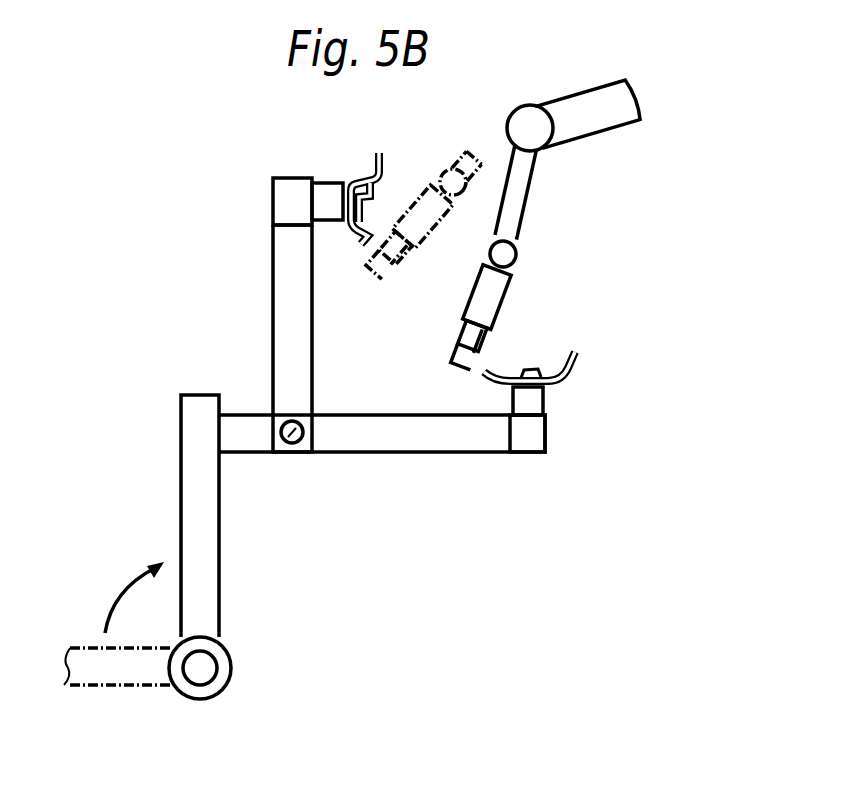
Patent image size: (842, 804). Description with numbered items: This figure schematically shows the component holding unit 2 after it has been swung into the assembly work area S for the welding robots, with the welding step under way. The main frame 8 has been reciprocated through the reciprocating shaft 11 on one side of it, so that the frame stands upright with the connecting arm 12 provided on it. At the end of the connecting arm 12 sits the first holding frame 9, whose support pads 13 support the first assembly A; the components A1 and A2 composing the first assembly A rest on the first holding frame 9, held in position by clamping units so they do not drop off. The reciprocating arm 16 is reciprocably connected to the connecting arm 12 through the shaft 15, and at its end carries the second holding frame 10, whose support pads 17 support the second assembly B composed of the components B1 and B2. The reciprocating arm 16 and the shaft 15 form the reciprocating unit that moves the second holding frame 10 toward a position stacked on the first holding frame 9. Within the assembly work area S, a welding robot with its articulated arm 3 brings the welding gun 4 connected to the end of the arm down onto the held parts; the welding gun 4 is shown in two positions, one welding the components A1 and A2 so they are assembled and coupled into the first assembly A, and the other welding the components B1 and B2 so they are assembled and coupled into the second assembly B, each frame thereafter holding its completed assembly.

The component holding unit 2 is at (158, 343).
The articulated arm 3 is at (578, 103).
The welding gun 4 is at (457, 303).
The assembly work area S is at (652, 199).
The main frame 8 is at (220, 560).
The first holding frame 9 is at (547, 440).
The second holding frame 10 is at (291, 179).
The reciprocating shaft 11 is at (200, 668).
The connecting arm 12 is at (396, 453).
The support pads 13 is at (547, 400).
The shaft 15 is at (293, 453).
The reciprocating arm 16 is at (273, 306).
The support pads 17 is at (329, 183).
The first assembly A is at (567, 351).
The component A1 is at (561, 346).
The component A2 is at (524, 369).
The second assembly B is at (396, 170).
The component B1 is at (377, 154).
The component B2 is at (372, 190).